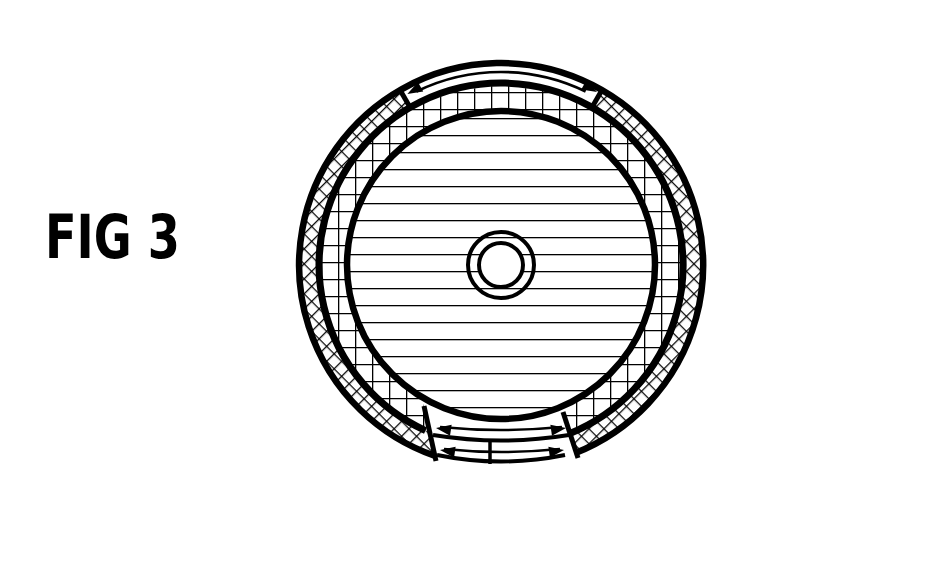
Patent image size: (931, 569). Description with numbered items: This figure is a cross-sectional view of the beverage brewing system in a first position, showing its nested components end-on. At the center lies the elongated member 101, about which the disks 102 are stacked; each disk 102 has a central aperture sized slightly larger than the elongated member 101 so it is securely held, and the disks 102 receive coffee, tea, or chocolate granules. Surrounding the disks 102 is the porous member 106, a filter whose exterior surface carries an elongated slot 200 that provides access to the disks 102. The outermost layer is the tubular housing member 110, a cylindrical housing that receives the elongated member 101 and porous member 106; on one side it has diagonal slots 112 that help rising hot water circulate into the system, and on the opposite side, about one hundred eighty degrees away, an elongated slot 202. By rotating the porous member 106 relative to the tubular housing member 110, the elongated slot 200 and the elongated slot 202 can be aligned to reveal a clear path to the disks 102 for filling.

The elongated member 101 is at (523, 282).
The disk 102 is at (408, 358).
The porous member 106 is at (663, 152).
The tubular housing member 110 is at (362, 141).
The slots 112 is at (497, 70).
The elongated slot 200 is at (489, 464).
The elongated slot 202 is at (496, 464).